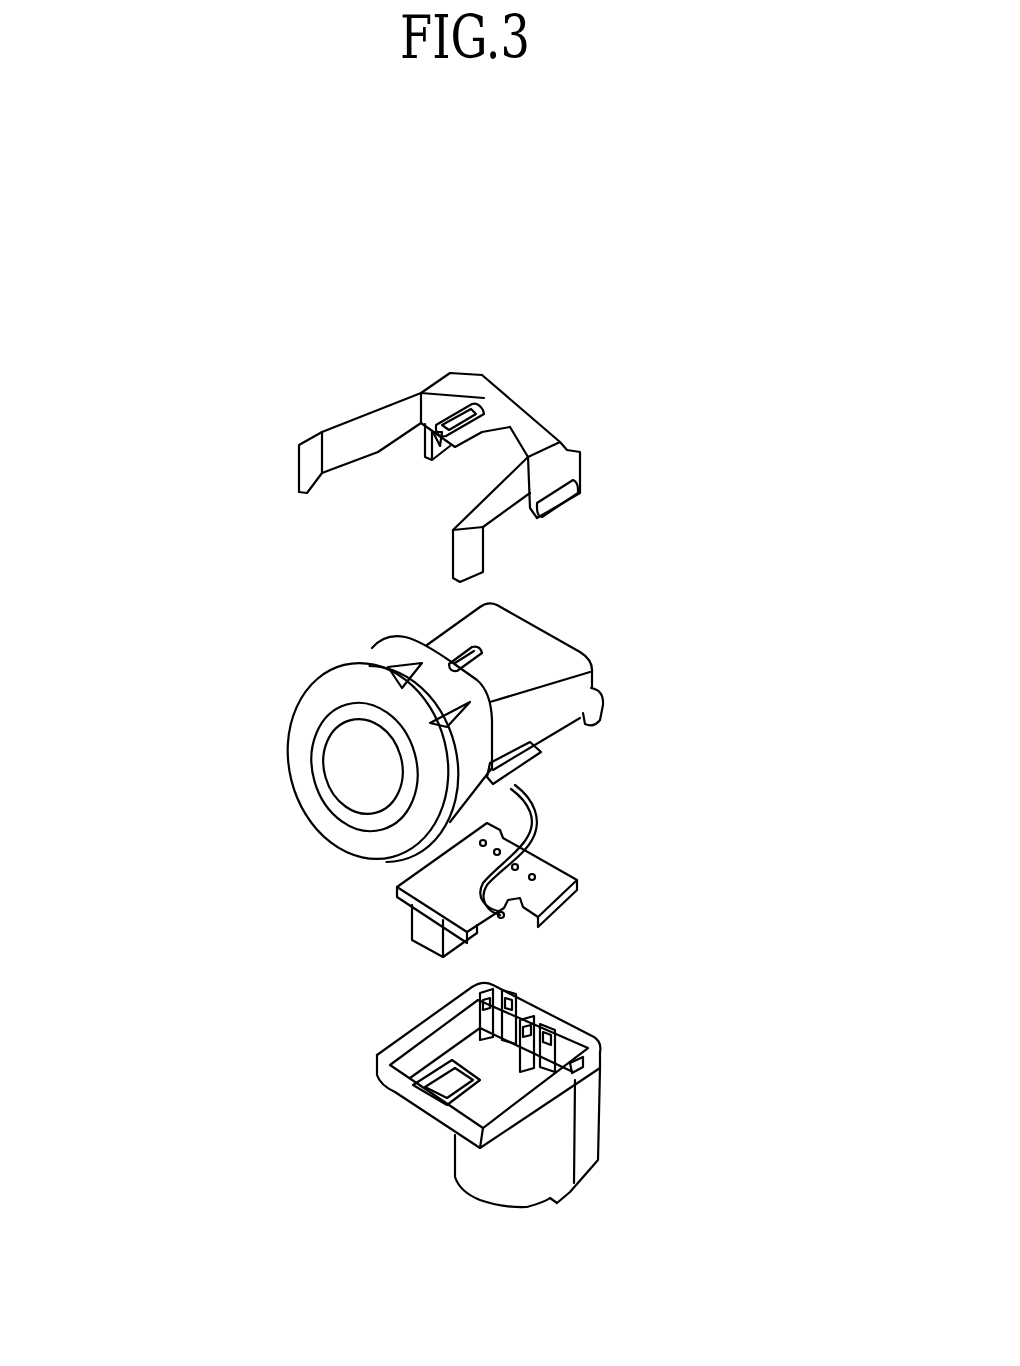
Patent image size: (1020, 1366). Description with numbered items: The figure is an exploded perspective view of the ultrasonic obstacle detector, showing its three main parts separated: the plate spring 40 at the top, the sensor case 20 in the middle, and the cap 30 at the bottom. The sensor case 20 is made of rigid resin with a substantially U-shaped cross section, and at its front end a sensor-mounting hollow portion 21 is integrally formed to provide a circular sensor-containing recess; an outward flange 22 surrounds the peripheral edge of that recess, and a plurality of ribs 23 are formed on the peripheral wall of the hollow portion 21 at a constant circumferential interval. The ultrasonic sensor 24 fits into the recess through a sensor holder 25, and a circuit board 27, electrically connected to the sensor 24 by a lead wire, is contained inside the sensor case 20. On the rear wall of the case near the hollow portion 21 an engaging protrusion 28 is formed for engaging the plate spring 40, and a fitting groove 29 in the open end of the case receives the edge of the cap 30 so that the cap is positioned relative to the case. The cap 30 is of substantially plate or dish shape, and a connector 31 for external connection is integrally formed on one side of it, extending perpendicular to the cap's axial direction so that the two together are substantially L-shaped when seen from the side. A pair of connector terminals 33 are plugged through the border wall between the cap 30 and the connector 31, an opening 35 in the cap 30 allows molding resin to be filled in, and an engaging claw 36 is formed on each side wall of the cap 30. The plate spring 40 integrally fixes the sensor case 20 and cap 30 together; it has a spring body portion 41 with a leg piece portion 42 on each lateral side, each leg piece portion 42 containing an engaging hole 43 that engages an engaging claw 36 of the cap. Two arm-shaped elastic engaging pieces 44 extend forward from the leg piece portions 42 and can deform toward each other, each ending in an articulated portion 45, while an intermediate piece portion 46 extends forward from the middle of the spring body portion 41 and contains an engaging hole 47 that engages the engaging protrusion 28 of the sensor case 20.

The sensor case 20 is at (427, 750).
The sensor-mounting hollow portion 21 is at (482, 683).
The outward flange 22 is at (336, 733).
The ribs 23 is at (384, 638).
The ultrasonic sensor 24 is at (296, 797).
The sensor holder 25 is at (317, 762).
The circuit board 27 is at (536, 871).
The engaging protrusion 28 is at (559, 679).
The fitting groove 29 is at (629, 748).
The cap 30 is at (509, 1108).
The connector for external connection 31 is at (488, 1148).
The connector terminals 33 is at (577, 988).
The opening 35 is at (415, 1132).
The engaging claw 36 is at (640, 1094).
The plate spring 40 is at (437, 422).
The spring body portion 41 is at (559, 466).
The leg piece portions 42 is at (509, 398).
The engaging hole 43 is at (604, 503).
The elastic engaging pieces 44 is at (357, 392).
The articulated portion 45 is at (262, 428).
The intermediate piece portion 46 is at (424, 477).
The engaging hole 47 is at (460, 351).